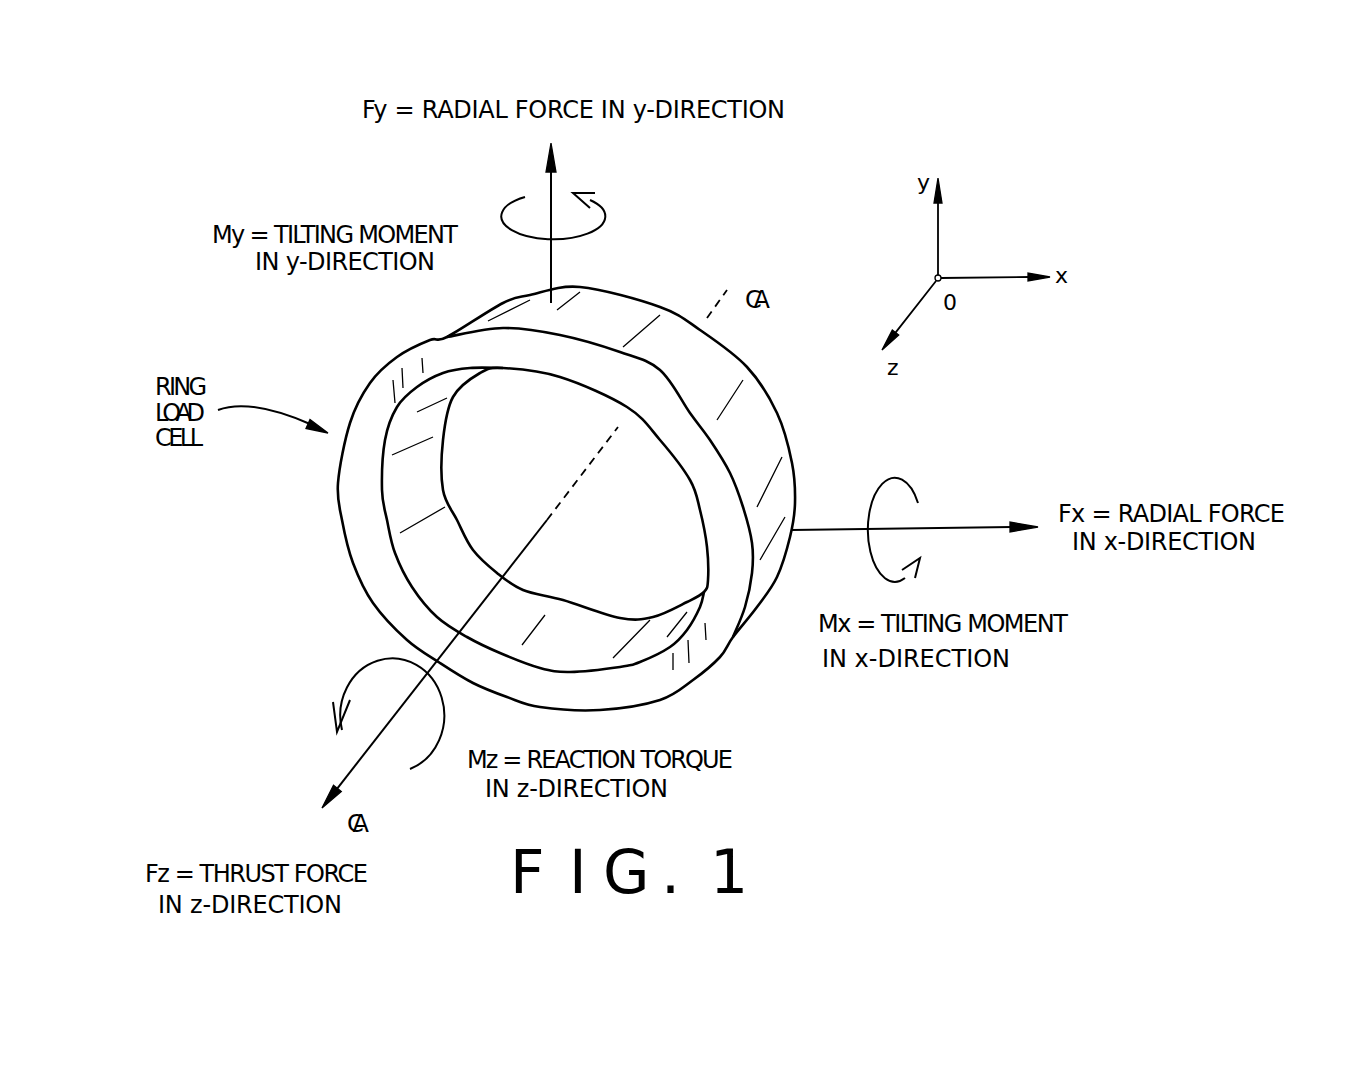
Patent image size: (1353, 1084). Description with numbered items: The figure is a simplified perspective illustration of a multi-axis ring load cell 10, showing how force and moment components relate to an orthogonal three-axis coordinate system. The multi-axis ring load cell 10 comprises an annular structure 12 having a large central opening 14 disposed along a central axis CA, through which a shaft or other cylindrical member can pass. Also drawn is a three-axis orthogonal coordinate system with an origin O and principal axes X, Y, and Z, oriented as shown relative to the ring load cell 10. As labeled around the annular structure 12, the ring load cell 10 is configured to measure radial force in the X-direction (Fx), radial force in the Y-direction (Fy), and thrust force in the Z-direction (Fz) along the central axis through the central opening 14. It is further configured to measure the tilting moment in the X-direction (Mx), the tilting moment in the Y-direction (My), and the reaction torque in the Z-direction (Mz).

The multi-axis ring load cell 10 is at (683, 302).
The annular structure 12 is at (783, 416).
The central opening 14 is at (623, 536).